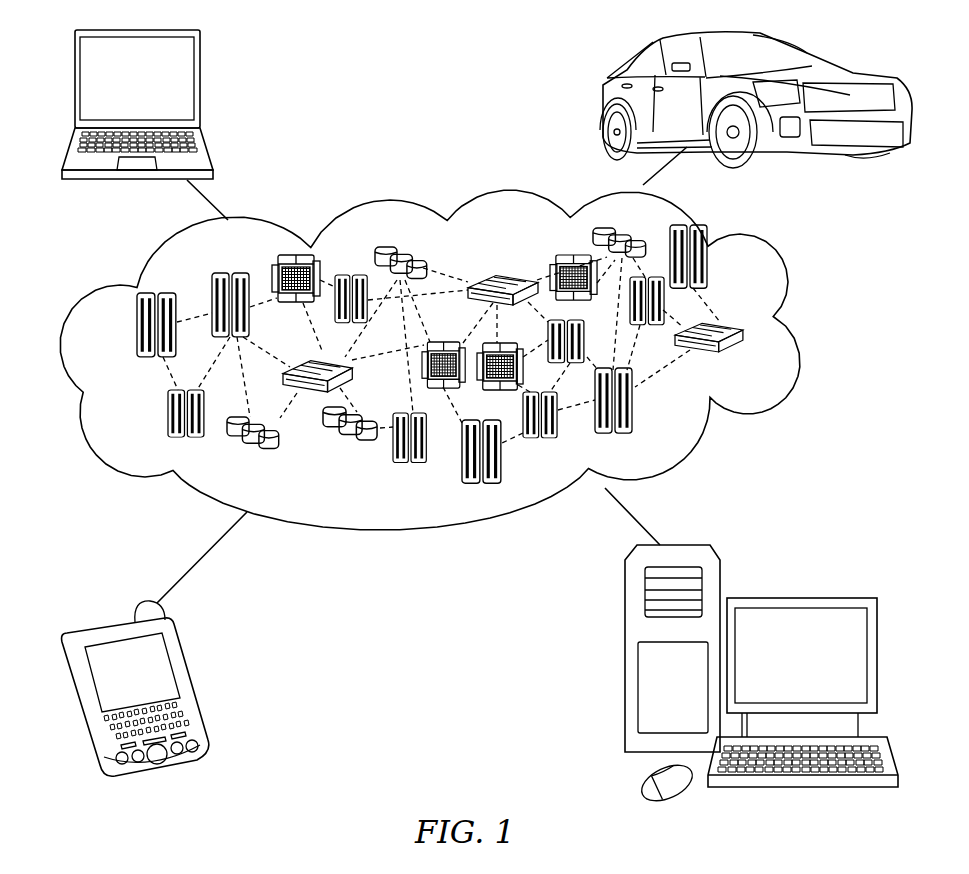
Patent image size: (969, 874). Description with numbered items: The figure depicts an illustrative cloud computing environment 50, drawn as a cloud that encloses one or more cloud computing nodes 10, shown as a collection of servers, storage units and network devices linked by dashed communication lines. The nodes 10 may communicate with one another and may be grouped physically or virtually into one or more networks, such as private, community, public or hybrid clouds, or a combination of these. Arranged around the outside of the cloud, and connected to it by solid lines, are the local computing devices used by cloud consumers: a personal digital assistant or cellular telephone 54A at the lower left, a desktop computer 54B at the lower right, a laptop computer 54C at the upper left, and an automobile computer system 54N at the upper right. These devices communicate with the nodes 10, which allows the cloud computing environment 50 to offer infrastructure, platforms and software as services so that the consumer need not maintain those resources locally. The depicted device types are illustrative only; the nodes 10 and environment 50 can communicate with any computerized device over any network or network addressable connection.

The cloud computing nodes 10 is at (752, 366).
The cloud computing environment 50 is at (798, 333).
The personal digital assistant or cellular telephone 54A is at (193, 683).
The desktop computer 54B is at (800, 598).
The laptop computer 54C is at (200, 85).
The automobile computer system 54N is at (598, 100).